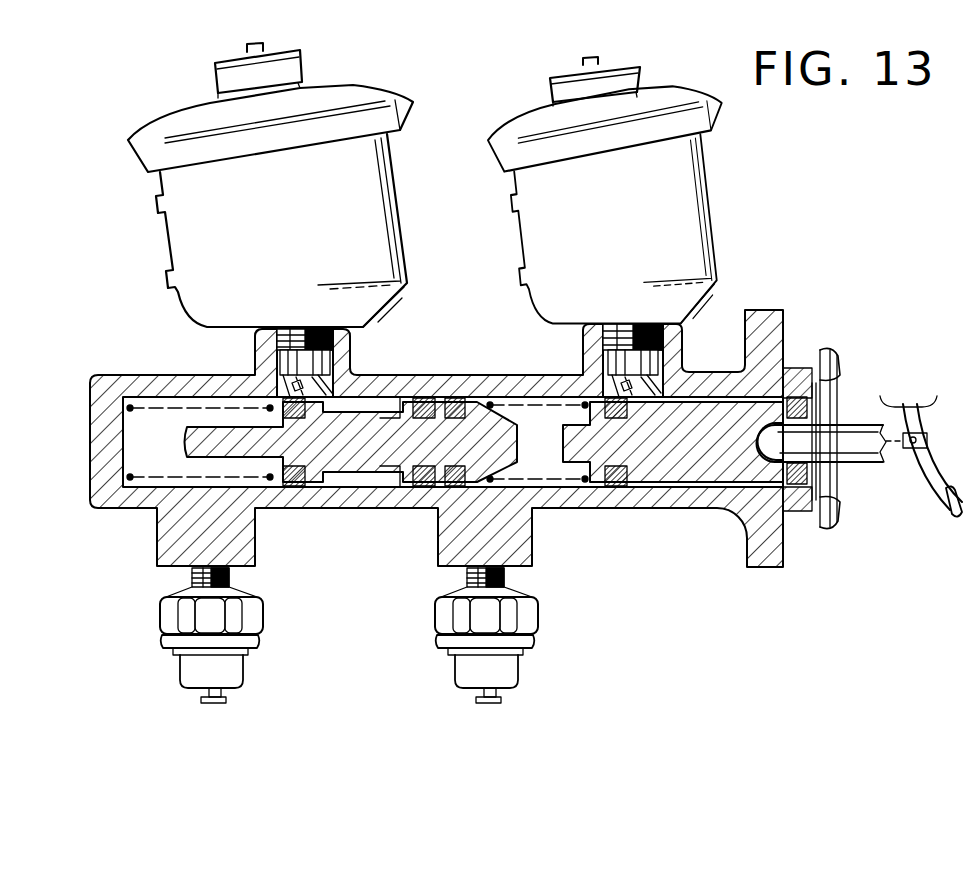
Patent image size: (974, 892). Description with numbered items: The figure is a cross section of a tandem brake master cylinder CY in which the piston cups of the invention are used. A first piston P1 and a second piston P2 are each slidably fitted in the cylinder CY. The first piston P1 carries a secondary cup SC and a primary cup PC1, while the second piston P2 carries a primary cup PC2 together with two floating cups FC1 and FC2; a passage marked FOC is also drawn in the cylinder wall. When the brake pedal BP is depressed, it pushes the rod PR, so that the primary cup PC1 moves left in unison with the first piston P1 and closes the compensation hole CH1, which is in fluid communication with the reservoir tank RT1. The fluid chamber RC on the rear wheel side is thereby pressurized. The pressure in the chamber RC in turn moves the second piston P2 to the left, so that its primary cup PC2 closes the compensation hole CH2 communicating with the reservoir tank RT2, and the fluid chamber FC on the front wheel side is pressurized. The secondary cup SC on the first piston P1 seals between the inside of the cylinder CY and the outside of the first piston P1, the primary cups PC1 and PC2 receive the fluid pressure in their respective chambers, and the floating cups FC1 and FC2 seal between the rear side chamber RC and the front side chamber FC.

The reservoir tank RT1 is at (718, 273).
The reservoir tank RT2 is at (408, 283).
The compensation hole CH1 is at (618, 388).
The compensation hole CH2 is at (290, 390).
The fluid chamber of the front wheel side FC is at (152, 467).
The floating cup FC1 is at (455, 400).
The floating cup FC2 is at (423, 400).
The primary cup PC1 is at (627, 480).
The primary cup PC2 is at (300, 486).
The first piston P1 is at (712, 465).
The second piston P2 is at (347, 463).
The fluid orifice FOC is at (388, 470).
The fluid chamber of the rear wheel side RC is at (542, 465).
The tandem master cylinder CY is at (587, 492).
The rod PR is at (852, 425).
The secondary cup SC is at (805, 473).
The brake pedal BP is at (930, 475).